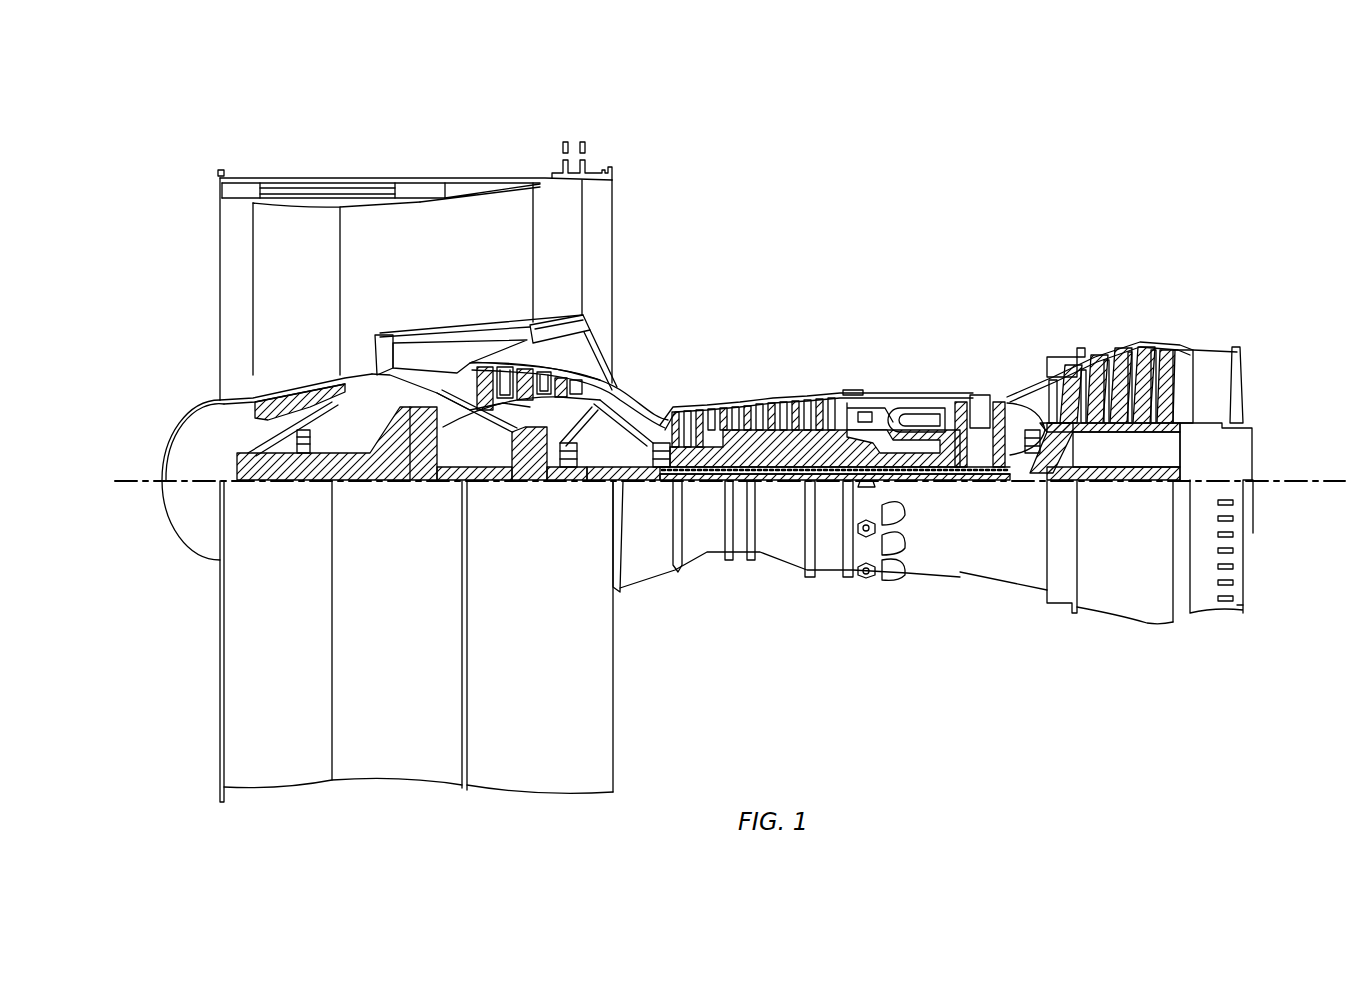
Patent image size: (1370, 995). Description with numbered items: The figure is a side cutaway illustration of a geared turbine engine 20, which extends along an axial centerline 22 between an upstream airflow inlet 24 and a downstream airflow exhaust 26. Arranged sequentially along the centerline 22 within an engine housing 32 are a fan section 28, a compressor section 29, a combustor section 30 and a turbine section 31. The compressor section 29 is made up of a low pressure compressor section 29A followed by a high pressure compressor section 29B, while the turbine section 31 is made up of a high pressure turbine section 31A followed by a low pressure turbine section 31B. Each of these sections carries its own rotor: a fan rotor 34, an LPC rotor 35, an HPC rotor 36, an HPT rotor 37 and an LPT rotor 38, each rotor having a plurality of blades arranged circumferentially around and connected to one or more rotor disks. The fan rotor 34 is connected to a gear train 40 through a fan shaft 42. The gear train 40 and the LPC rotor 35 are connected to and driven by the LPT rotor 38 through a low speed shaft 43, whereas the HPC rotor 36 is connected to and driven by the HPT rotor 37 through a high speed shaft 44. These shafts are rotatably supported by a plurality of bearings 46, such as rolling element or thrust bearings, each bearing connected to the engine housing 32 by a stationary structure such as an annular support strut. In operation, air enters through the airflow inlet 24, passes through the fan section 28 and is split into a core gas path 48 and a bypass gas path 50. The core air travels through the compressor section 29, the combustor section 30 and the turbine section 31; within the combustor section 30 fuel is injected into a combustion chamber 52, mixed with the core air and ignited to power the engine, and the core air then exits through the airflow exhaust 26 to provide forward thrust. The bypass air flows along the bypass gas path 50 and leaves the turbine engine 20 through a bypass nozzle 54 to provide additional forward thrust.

The geared turbine engine 20 is at (180, 160).
The axial centerline 22 is at (1313, 475).
The airflow inlet 24 is at (220, 243).
The airflow exhaust 26 is at (1242, 385).
The fan section 28 is at (416, 452).
The compressor section 29 is at (828, 97).
The low pressure compressor (LPC) section 29A is at (615, 143).
The high pressure compressor (HPC) section 29B is at (828, 325).
The combustor section 30 is at (947, 325).
The turbine section 31 is at (1203, 257).
The high pressure turbine (HPT) section 31A is at (1023, 325).
The low pressure turbine (LPT) section 31B is at (1203, 325).
The engine housing 32 is at (628, 600).
The fan rotor 34 is at (236, 403).
The LPC rotor 35 is at (525, 440).
The HPC rotor 36 is at (790, 450).
The HPT rotor 37 is at (985, 482).
The LPT rotor 38 is at (1135, 425).
The gear train 40 is at (425, 480).
The fan shaft 42 is at (263, 486).
The low speed shaft 43 is at (1130, 485).
The high speed shaft 44 is at (910, 478).
The bearings 46 is at (316, 455).
The core gas path 48 is at (636, 410).
The bypass gas path 50 is at (468, 264).
The combustion chamber 52 is at (927, 417).
The bypass nozzle 54 is at (612, 238).